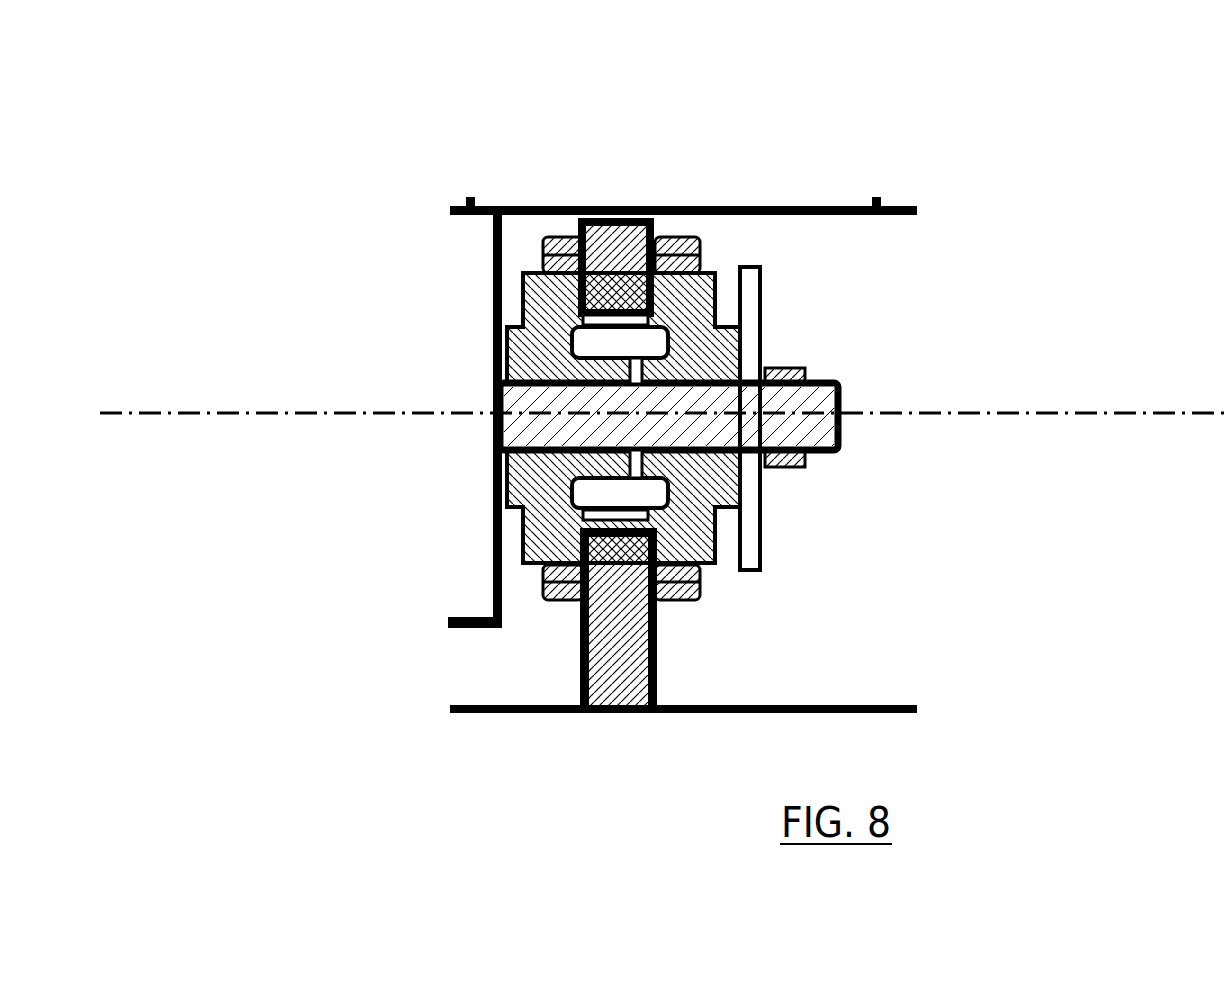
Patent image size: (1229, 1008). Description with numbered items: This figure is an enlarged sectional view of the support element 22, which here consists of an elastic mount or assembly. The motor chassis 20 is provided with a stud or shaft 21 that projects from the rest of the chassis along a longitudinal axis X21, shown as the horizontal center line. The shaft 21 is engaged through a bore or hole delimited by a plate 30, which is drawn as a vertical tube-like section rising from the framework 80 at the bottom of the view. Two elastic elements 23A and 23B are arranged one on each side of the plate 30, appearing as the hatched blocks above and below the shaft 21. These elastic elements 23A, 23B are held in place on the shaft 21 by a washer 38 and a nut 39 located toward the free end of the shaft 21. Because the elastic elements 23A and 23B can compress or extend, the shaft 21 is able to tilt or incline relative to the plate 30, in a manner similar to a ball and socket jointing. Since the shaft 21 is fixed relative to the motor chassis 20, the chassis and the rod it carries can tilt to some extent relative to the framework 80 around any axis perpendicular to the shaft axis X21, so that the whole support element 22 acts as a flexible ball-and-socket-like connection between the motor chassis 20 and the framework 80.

The longitudinal axis X21 is at (664, 372).
The motor chassis 20 is at (644, 412).
The framework 80 is at (682, 742).
The plate 30 is at (582, 661).
The shaft 21 is at (822, 383).
The support element 22 is at (717, 404).
The elastic element 23A is at (525, 305).
The elastic element 23B is at (693, 620).
The washer 38 is at (747, 267).
The nut 39 is at (782, 472).